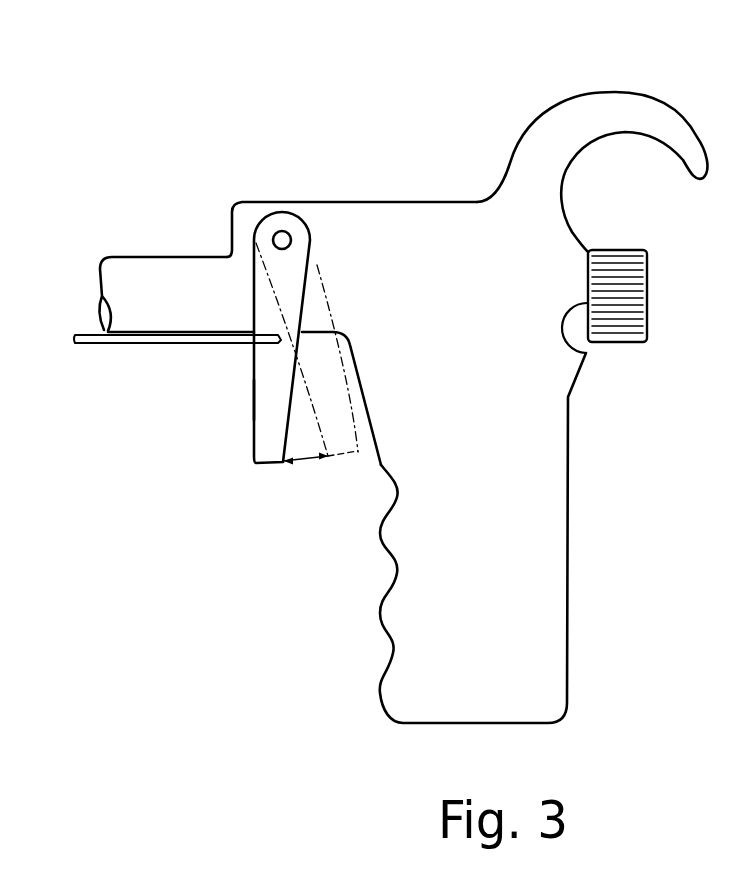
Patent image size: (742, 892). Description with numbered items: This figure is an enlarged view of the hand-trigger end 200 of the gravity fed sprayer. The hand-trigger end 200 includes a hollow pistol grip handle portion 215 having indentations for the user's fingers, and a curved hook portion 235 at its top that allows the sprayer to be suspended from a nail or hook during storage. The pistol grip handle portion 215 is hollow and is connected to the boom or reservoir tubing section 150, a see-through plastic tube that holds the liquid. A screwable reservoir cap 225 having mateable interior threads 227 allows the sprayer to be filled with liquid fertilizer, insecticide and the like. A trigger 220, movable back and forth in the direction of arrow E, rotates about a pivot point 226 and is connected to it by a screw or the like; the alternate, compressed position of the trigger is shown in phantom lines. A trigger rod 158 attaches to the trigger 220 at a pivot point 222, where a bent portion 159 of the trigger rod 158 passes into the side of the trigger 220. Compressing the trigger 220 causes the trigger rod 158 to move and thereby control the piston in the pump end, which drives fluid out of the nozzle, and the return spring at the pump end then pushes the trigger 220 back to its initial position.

The reservoir tubing section 150 is at (125, 257).
The trigger rod 158 is at (170, 345).
The bent portion 159 is at (260, 402).
The hand-trigger end 200 is at (352, 267).
The pistol grip handle portion 215 is at (567, 537).
The trigger 220 is at (260, 467).
The pivot point 222 is at (257, 367).
The screwable reservoir cap 225 is at (647, 297).
The pivot point 226 is at (280, 231).
The mateable interior threads 227 is at (580, 360).
The curved hook portion 235 is at (617, 110).